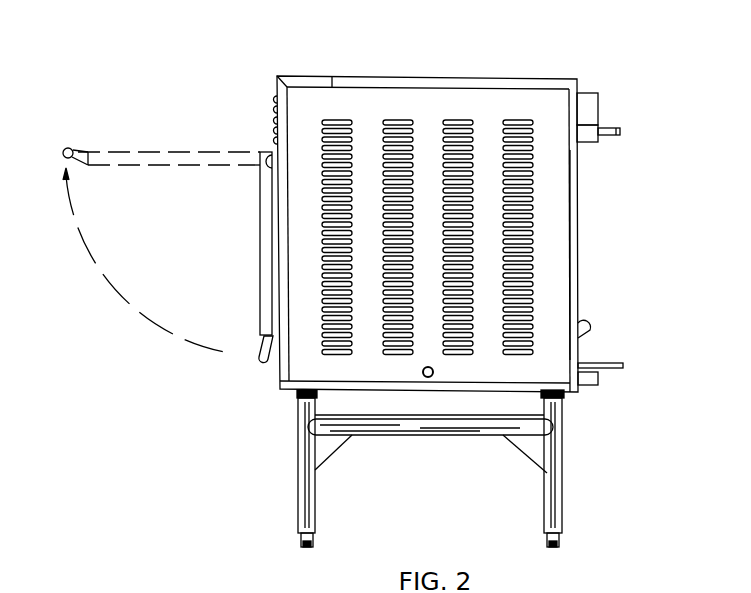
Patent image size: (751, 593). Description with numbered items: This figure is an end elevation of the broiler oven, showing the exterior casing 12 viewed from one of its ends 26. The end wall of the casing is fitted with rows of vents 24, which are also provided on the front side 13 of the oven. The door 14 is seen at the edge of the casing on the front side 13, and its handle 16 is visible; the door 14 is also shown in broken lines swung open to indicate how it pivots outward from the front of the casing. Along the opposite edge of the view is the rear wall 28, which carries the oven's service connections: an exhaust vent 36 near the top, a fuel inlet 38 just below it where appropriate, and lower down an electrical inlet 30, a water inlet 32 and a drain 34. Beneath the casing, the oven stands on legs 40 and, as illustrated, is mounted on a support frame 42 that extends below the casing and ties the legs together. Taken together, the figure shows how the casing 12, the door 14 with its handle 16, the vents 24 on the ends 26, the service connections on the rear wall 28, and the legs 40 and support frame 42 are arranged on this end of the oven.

The exterior casing 12 is at (572, 268).
The front side 13 is at (280, 380).
The door 14 is at (272, 208).
The handle 16 is at (258, 356).
The vents 24 is at (322, 122).
The ends 26 is at (557, 223).
The rear wall 28 is at (580, 300).
The electrical inlet 30 is at (590, 333).
The water inlet 32 is at (623, 368).
The drain 34 is at (600, 385).
The exhaust vent 36 is at (600, 97).
The fuel inlet 38 is at (620, 135).
The legs 40 is at (296, 398).
The support frame 42 is at (300, 486).